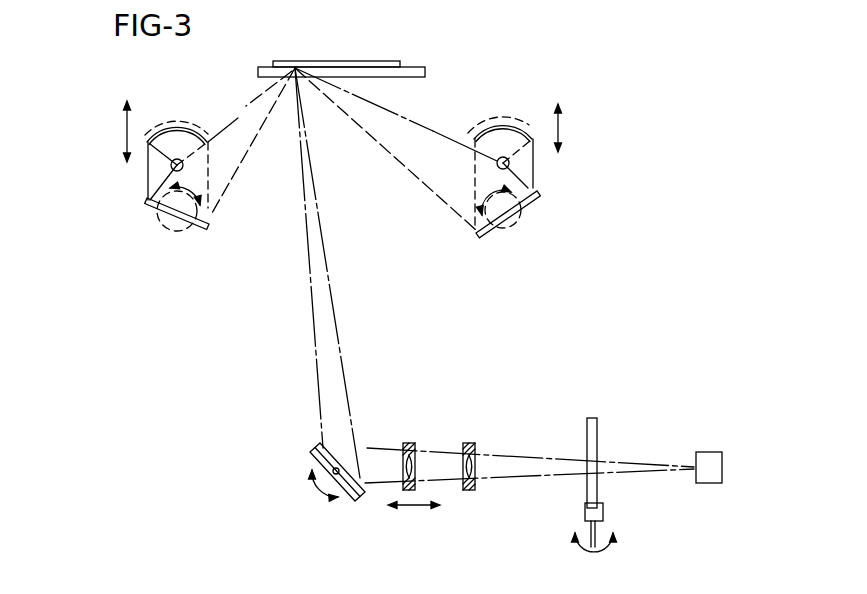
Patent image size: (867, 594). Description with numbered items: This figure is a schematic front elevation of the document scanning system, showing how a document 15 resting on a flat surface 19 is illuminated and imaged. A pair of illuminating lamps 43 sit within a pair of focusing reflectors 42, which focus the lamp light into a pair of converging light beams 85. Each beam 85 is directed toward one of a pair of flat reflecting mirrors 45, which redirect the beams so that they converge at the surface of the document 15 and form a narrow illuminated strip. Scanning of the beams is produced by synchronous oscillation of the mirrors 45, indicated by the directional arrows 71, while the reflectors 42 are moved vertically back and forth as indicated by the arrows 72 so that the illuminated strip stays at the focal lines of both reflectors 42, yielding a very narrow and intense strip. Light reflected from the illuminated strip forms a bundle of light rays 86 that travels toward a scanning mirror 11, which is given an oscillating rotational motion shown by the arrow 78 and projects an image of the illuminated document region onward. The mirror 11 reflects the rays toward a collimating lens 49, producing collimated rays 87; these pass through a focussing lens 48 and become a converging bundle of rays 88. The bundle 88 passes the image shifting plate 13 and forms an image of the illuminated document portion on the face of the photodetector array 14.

The scanning mirror 11 is at (342, 448).
The image shifting plate 13 is at (597, 440).
The photodetector array 14 is at (708, 462).
The document 15 is at (337, 62).
The flat surface 19 is at (410, 66).
The focusing reflector 42 is at (183, 115).
The illuminating lamp 43 is at (171, 167).
The flat reflecting mirror 45 is at (205, 213).
The focussing lens 48 is at (482, 462).
The collimating lens 49 is at (415, 472).
The directional arrow 71 is at (170, 218).
The arrow 72 is at (123, 138).
The arrow 78 is at (313, 498).
The converging light beam 85 is at (243, 120).
The bundle of light rays 86 is at (332, 407).
The collimated rays 87 is at (442, 470).
The converging bundle of rays 88 is at (517, 467).